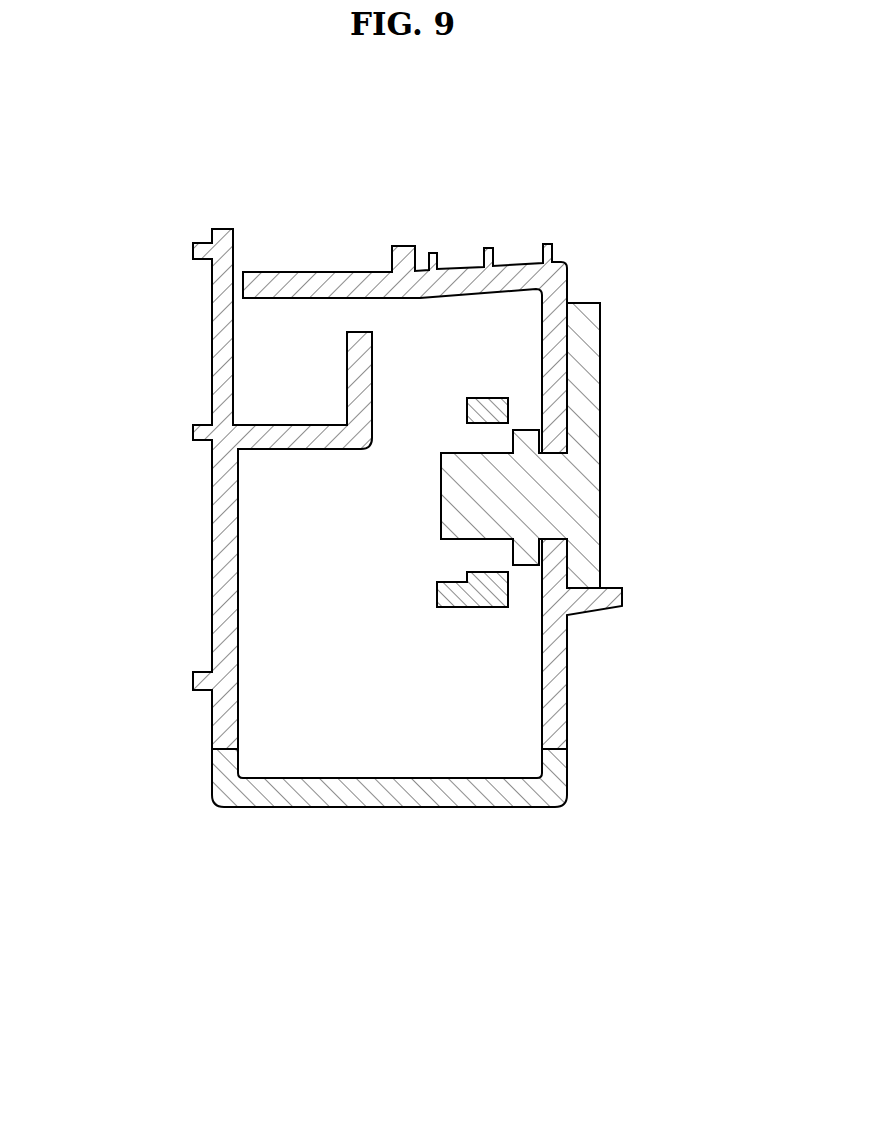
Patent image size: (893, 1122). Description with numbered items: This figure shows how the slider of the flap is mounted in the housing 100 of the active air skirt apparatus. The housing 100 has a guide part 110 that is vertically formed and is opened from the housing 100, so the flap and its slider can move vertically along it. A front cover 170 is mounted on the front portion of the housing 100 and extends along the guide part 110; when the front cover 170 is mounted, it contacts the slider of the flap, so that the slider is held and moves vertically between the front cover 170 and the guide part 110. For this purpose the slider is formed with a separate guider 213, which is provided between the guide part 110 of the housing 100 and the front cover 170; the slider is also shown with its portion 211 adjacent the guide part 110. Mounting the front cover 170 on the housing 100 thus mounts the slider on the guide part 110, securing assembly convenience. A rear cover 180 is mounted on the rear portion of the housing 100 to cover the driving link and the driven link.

The housing 100 is at (227, 610).
The guide part 110 is at (556, 560).
The front cover 170 is at (452, 272).
The rear cover 180 is at (405, 793).
The frame member 211 is at (590, 383).
The guider 213 is at (460, 496).